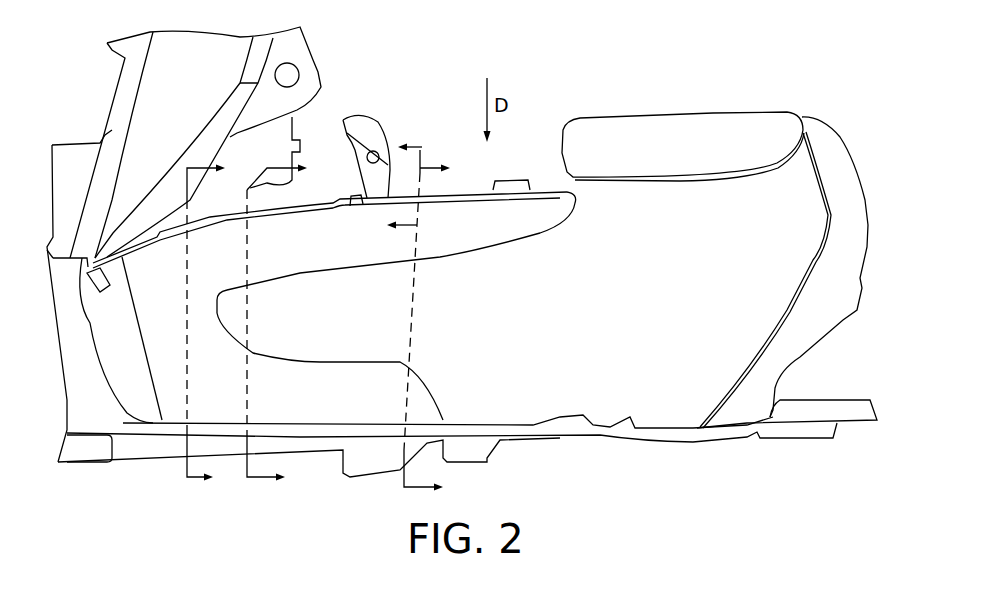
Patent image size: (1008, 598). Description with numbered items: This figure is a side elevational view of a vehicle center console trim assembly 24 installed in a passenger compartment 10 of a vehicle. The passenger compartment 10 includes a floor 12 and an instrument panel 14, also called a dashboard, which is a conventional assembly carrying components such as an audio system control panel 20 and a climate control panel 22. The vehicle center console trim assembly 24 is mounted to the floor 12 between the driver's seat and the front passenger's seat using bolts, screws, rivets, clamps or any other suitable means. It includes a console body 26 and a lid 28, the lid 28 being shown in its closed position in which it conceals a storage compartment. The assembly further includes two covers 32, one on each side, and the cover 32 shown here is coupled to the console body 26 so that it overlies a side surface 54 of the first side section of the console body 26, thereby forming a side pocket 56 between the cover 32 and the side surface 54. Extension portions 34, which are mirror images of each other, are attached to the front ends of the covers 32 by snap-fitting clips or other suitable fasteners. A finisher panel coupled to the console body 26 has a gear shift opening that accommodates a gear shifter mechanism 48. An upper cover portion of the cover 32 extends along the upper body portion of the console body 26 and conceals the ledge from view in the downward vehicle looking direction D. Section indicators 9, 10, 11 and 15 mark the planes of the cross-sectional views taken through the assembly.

The section line 9- 9 is at (217, 323).
The passenger compartment 10 is at (535, 54).
The section line 11- 11 is at (447, 327).
The floor 12 is at (125, 423).
The instrument panel 14 is at (210, 58).
The section line 15- 15 is at (389, 178).
The audio system control panel 20 is at (318, 62).
The climate control panel 22 is at (313, 110).
The vehicle center console trim assembly 24 is at (866, 151).
The console body 26 is at (777, 243).
The lid 28 is at (690, 137).
The cover 32 is at (308, 398).
The extension portion 34 is at (112, 372).
The gear shifter mechanism 48 is at (378, 120).
The side surface 54 is at (303, 297).
The side pocket 56 is at (278, 322).